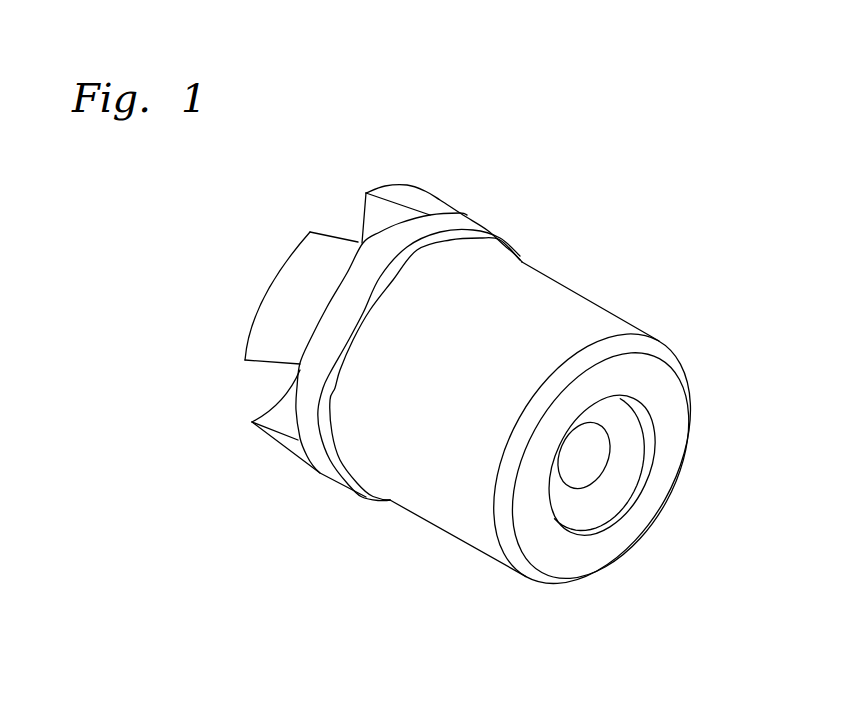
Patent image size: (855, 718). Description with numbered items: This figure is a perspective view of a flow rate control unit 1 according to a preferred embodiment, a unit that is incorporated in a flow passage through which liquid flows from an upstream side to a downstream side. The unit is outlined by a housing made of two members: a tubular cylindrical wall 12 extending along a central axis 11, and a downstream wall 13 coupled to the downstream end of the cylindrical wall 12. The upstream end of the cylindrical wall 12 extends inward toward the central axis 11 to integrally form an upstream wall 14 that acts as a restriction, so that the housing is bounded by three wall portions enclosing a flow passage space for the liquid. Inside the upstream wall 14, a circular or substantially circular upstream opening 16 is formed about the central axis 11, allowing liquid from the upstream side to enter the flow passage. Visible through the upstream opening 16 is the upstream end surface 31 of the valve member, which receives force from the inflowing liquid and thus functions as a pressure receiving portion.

The flow rate control unit 1 is at (490, 444).
The central axis 11 is at (443, 444).
The cylindrical wall 12 is at (432, 507).
The downstream wall 13 is at (253, 362).
The upstream wall 14 is at (672, 424).
The upstream opening 16 is at (642, 454).
The upstream end surface 31 is at (606, 478).